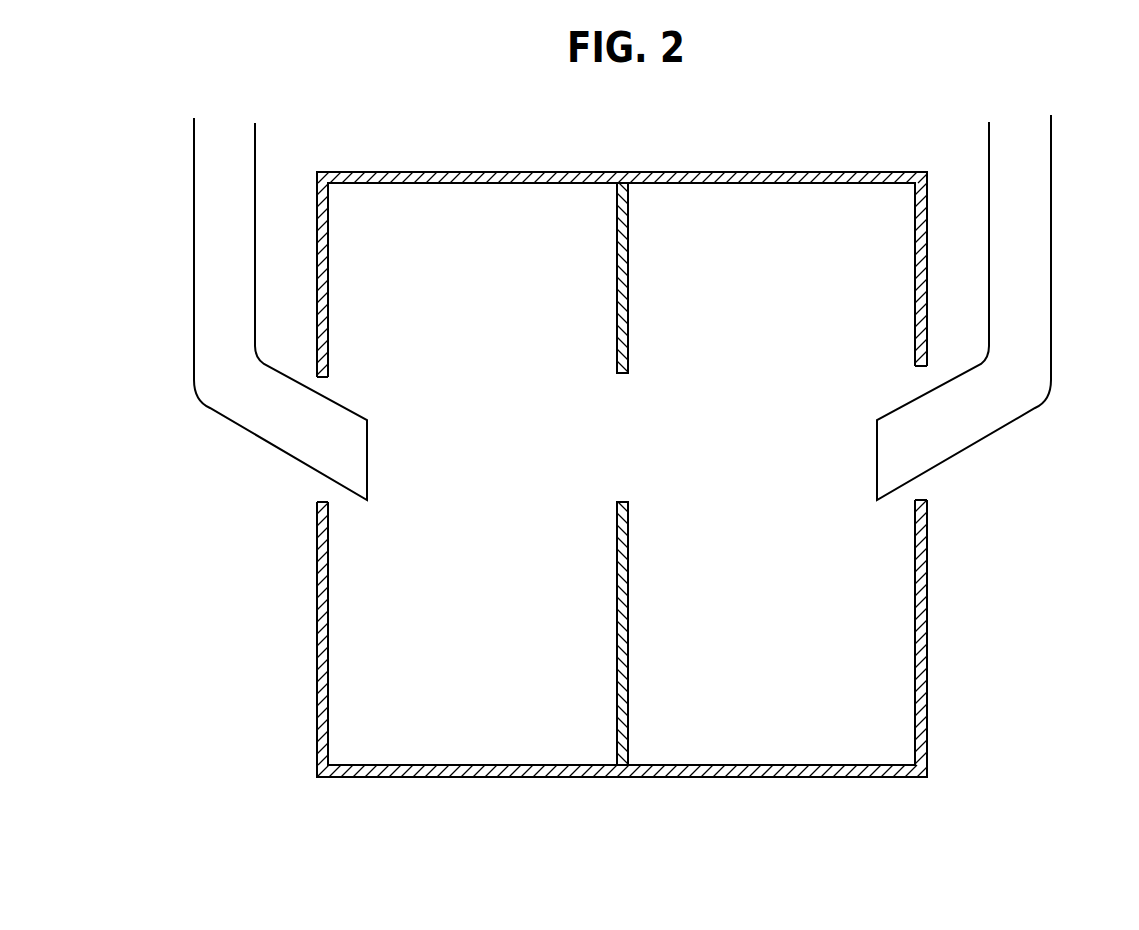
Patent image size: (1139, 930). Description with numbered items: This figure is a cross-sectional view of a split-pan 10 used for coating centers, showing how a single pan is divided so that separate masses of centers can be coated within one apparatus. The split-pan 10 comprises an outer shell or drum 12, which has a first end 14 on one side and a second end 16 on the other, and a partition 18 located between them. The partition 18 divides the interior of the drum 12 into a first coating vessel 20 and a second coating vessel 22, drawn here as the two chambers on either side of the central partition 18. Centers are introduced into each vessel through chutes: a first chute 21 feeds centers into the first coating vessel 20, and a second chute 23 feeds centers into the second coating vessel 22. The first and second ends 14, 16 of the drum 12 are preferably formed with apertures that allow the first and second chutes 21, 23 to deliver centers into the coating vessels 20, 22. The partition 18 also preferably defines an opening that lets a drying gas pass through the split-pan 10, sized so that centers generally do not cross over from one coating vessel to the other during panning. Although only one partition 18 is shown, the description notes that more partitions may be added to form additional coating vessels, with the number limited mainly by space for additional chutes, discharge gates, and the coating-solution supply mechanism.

The split-pan 10 is at (624, 486).
The outer shell or drum 12 is at (818, 172).
The first end 14 is at (317, 618).
The second end 16 is at (928, 583).
The partition 18 is at (628, 250).
The first coating vessel 20 is at (487, 524).
The second coating vessel 22 is at (786, 524).
The first chute 21 is at (193, 287).
The second chute 23 is at (1052, 237).